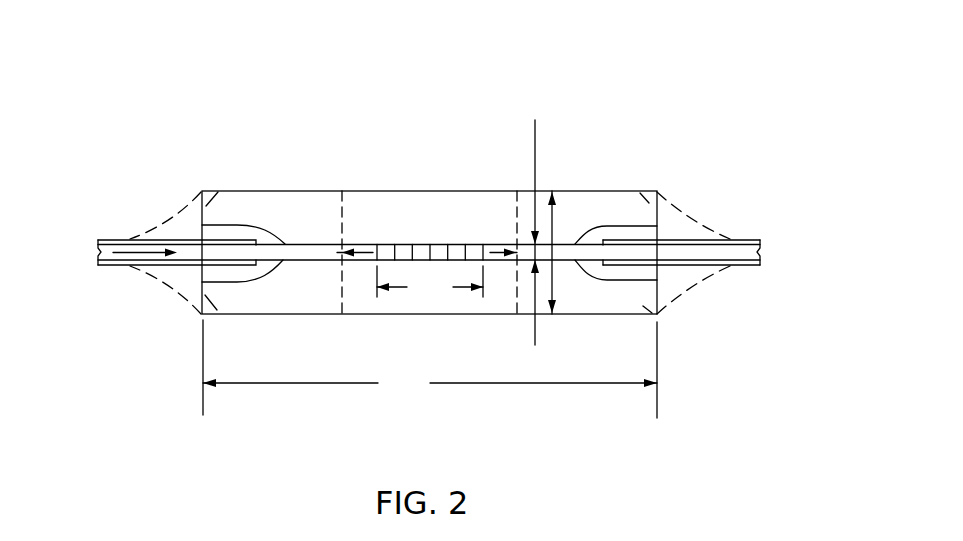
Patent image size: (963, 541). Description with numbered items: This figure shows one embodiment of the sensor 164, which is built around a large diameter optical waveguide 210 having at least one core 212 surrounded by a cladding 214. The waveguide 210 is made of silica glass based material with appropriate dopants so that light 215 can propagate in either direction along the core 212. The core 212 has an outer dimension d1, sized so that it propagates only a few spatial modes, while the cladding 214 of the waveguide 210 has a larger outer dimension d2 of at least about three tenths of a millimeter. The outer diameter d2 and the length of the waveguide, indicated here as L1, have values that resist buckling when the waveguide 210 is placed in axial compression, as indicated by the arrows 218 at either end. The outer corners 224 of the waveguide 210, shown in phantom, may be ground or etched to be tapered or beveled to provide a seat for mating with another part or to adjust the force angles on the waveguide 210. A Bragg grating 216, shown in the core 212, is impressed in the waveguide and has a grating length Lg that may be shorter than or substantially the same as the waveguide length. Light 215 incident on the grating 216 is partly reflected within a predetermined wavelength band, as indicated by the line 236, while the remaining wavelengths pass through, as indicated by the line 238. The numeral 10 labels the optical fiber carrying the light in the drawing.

The sensor 164 is at (586, 79).
The large diameter optical waveguide 210 is at (329, 190).
The cladding 214 is at (372, 208).
The tapered outer corners 224 is at (208, 205).
The optical fiber 10 is at (300, 243).
The light 215 is at (138, 253).
The core 212 is at (762, 252).
The Bragg grating 216 is at (482, 238).
The arrows 218 is at (194, 297).
The line 236 is at (363, 256).
The line 238 is at (493, 255).
The grating length Lg is at (430, 286).
The package length L1 is at (430, 369).
The outer dimension of the core d1 is at (568, 278).
The outer dimension of the waveguide d2 is at (550, 228).